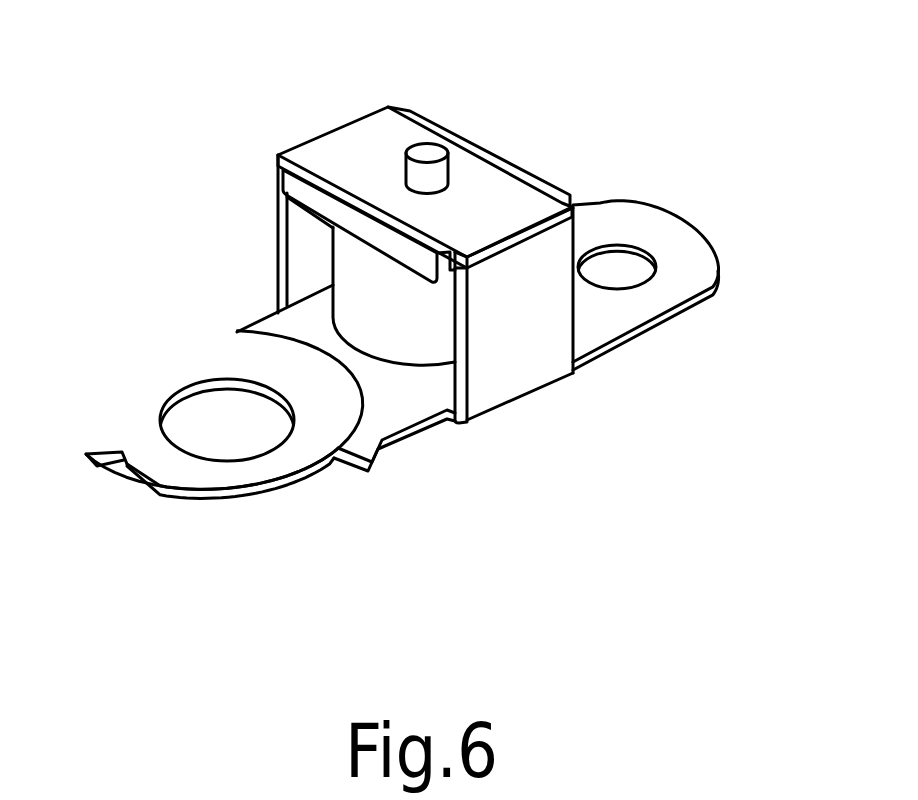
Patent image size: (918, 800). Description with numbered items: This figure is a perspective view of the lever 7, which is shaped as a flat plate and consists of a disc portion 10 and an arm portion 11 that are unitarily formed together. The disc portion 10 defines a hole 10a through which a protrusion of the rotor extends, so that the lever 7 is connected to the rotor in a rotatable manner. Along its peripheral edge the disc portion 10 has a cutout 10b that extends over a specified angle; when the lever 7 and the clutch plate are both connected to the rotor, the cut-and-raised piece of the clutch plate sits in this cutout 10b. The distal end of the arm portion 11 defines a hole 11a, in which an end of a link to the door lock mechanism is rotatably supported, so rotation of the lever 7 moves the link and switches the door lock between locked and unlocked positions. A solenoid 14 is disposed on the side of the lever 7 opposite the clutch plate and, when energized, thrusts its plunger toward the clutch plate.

The lever 7 is at (647, 333).
The disc portion 10 is at (115, 353).
The hole 10a is at (188, 402).
The cutout 10b is at (297, 487).
The arm portion 11 is at (633, 200).
The hole 11a is at (647, 268).
The solenoid 14 is at (350, 125).